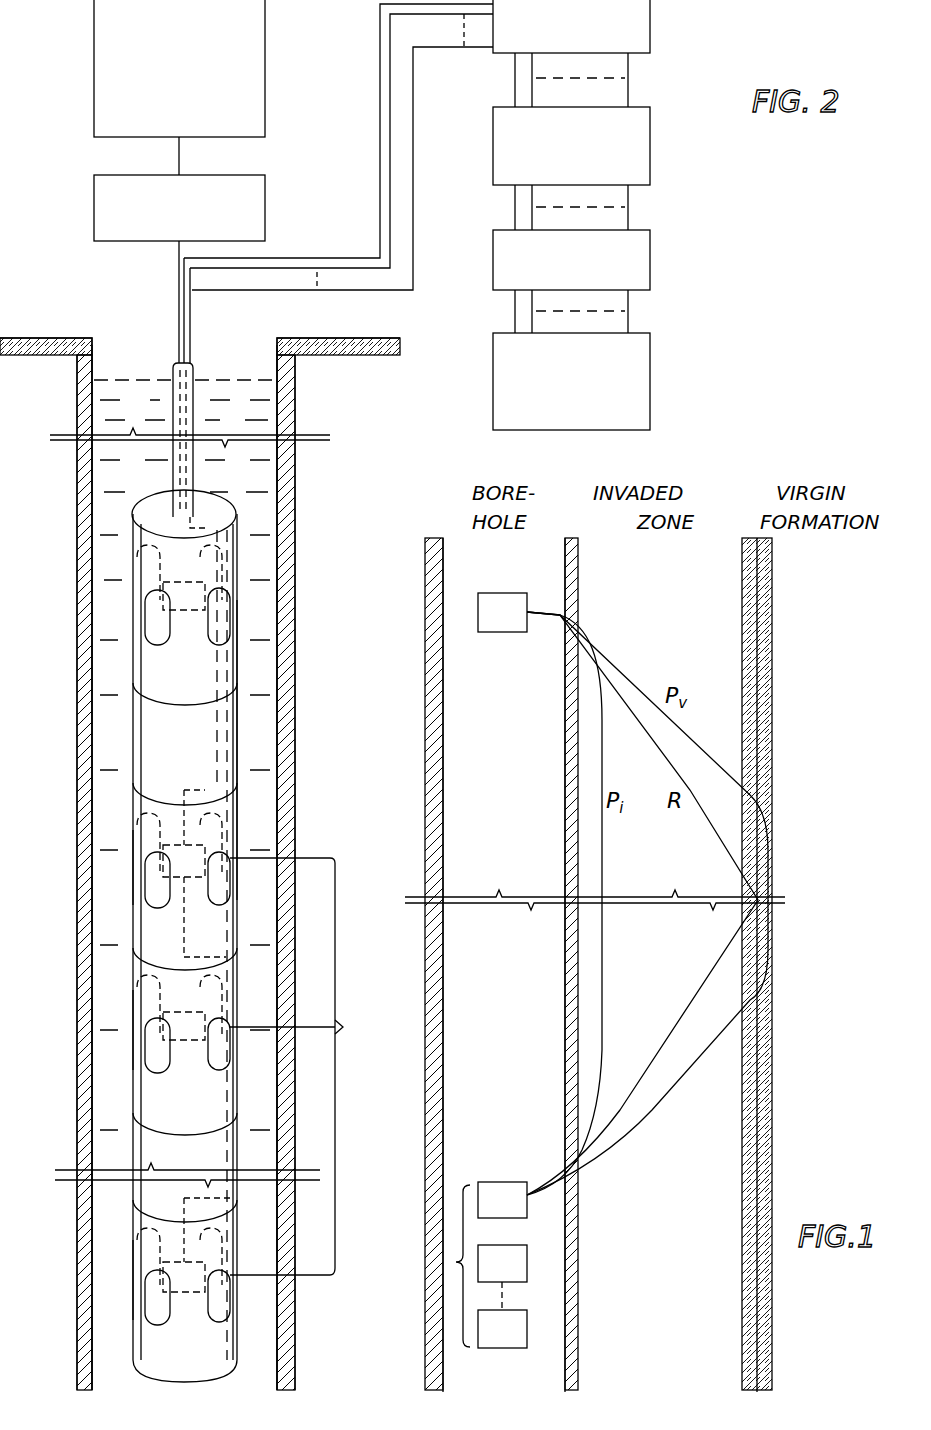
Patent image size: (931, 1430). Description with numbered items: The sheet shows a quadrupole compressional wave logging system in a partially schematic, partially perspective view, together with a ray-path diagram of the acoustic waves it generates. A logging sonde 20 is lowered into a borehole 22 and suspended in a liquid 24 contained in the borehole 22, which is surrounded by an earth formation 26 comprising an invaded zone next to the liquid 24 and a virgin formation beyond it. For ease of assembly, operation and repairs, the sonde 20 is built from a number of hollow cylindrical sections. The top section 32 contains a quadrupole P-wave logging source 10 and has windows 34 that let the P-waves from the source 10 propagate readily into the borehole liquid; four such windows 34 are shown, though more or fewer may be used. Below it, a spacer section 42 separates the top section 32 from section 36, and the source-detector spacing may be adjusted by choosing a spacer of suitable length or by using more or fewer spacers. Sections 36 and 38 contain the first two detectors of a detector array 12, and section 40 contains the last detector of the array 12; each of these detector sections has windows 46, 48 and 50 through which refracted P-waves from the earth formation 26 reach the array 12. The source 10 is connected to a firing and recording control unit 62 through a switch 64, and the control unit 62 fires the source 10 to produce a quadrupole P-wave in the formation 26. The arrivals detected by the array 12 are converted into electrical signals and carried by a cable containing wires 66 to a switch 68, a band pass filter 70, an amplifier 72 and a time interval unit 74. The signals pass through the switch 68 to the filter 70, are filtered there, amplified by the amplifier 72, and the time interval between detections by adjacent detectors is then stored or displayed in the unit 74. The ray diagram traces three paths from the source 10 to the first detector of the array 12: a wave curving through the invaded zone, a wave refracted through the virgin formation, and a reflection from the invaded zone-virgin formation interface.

In FIG. 2, the acoustic source 10 is at (205, 612).
In FIG. 1, the acoustic source 10 is at (478, 612).
In FIG. 2, the detector array 12 is at (343, 1027).
In FIG. 1, the detector array 12 is at (456, 1262).
In FIG. 2, the logging sonde 20 is at (108, 745).
In FIG. 2, the borehole 22 is at (111, 338).
In FIG. 2, the liquid 24 is at (265, 407).
In FIG. 2, the earth formation 26 is at (333, 484).
In FIG. 2, the top section 32 is at (133, 548).
In FIG. 2, the windows 34 is at (160, 645).
In FIG. 2, the section 36 is at (135, 873).
In FIG. 2, the section 38 is at (135, 1006).
In FIG. 2, the section 40 is at (135, 1282).
In FIG. 2, the spacer section 42 is at (237, 742).
In FIG. 2, the windows 46 is at (158, 900).
In FIG. 2, the windows 48 is at (158, 1065).
In FIG. 2, the windows 50 is at (150, 1312).
In FIG. 2, the firing and recording control unit 62 is at (94, 47).
In FIG. 2, the switch 64 is at (94, 203).
In FIG. 2, the wires 66 is at (413, 185).
In FIG. 2, the switch 68 is at (650, 22).
In FIG. 2, the band pass filter 70 is at (650, 146).
In FIG. 2, the amplifier 72 is at (650, 257).
In FIG. 2, the time interval unit 74 is at (650, 369).